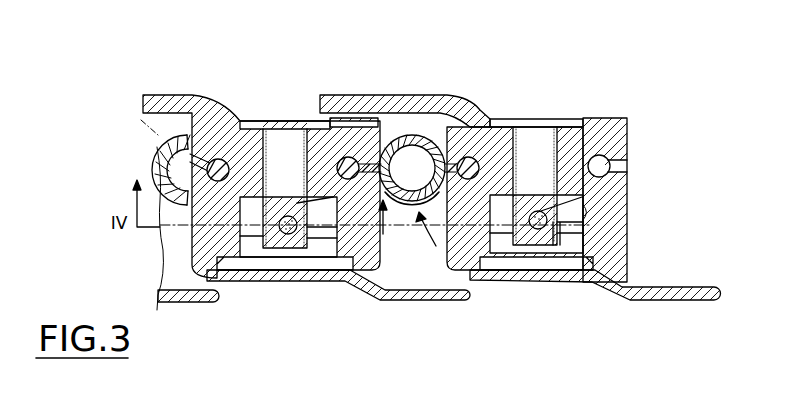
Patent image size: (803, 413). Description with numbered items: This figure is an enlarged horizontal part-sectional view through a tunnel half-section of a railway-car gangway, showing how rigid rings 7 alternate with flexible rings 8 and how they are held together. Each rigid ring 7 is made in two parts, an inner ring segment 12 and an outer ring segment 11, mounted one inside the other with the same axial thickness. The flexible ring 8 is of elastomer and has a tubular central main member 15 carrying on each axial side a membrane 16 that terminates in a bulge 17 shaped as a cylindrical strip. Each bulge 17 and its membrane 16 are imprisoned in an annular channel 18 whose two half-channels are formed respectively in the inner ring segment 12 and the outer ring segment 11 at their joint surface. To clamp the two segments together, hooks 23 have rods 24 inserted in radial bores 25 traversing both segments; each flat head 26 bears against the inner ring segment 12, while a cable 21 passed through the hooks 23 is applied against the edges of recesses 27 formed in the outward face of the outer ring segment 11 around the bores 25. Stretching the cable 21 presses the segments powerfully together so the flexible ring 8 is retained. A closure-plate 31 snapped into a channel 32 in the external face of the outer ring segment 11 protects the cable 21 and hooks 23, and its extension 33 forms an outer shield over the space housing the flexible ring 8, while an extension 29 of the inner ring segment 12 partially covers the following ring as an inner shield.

The rigid ring 7 is at (218, 86).
The flexible ring 8 is at (402, 192).
The outer ring segment 11 is at (610, 236).
The inner ring segment 12 is at (197, 93).
The central main member 15 is at (416, 142).
The membrane 16 is at (351, 156).
The bulge 17 is at (342, 120).
The annular channel 18 is at (411, 233).
The cable 21 is at (533, 230).
The hook 23 is at (556, 240).
The rod 24 is at (277, 142).
The radial bore 25 is at (550, 128).
The flat head 26 is at (500, 120).
The recess 27 is at (586, 212).
The extension 29 is at (397, 133).
The closure-plate 31 is at (275, 283).
The channel 32 is at (242, 283).
The extension 33 is at (432, 297).